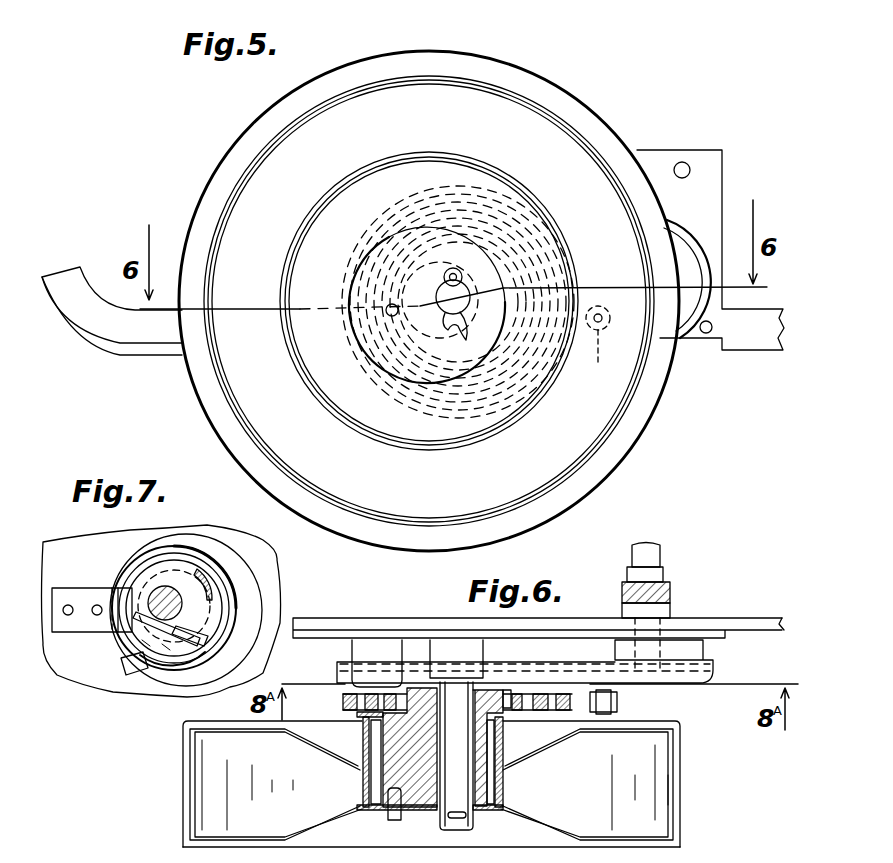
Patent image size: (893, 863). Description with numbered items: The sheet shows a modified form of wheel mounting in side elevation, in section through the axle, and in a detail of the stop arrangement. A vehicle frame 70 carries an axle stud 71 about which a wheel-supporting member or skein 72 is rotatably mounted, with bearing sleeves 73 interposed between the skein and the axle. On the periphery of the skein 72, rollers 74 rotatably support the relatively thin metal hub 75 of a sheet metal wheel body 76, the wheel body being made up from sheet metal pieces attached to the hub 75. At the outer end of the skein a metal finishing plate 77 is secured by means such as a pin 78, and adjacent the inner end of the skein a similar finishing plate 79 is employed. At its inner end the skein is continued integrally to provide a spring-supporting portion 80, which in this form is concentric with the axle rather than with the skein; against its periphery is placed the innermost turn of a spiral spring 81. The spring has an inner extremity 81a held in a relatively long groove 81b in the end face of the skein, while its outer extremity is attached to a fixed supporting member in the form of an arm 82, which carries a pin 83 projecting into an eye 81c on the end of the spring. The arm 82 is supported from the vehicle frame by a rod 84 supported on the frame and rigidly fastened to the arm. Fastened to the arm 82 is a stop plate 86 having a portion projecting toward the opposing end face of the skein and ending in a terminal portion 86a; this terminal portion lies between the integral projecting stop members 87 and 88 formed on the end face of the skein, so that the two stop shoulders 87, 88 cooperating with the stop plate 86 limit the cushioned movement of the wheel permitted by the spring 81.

In FIG. 5, the vehicle frame 70 is at (58, 277).
In FIG. 5, the axle stud 71 is at (458, 292).
In FIG. 7, the axle stud 71 is at (170, 590).
In FIG. 7, the wheel-supporting member or skein 72 is at (232, 606).
In FIG. 6, the wheel-supporting member or skein 72 is at (405, 771).
In FIG. 6, the bearing sleeves 73 is at (506, 690).
In FIG. 6, the rollers 74 is at (376, 752).
In FIG. 6, the metal hub 75 is at (363, 742).
In FIG. 5, the sheet metal wheel body 76 is at (583, 118).
In FIG. 7, the sheet metal wheel body 76 is at (231, 540).
In FIG. 6, the sheet metal wheel body 76 is at (183, 785).
In FIG. 5, the finishing plate 77 is at (392, 252).
In FIG. 6, the finishing plate 77 is at (420, 811).
In FIG. 5, the pin 78 is at (386, 306).
In FIG. 6, the pin 78 is at (390, 819).
In FIG. 7, the finishing plate 79 is at (237, 556).
In FIG. 6, the finishing plate 79 is at (358, 715).
In FIG. 7, the spring-supporting portion 80 is at (148, 562).
In FIG. 6, the spring-supporting portion 80 is at (417, 695).
In FIG. 5, the spiral spring 81 is at (527, 216).
In FIG. 7, the spiral spring 81 is at (150, 672).
In FIG. 6, the spiral spring 81 is at (368, 700).
In FIG. 7, the inner extremity 81a is at (150, 630).
In FIG. 7, the groove 81b is at (175, 606).
In FIG. 5, the eye 81c is at (595, 359).
In FIG. 6, the eye 81c is at (617, 703).
In FIG. 5, the arm 82 is at (683, 246).
In FIG. 6, the arm 82 is at (700, 671).
In FIG. 5, the pin 83 is at (603, 326).
In FIG. 6, the pin 83 is at (600, 688).
In FIG. 6, the rod 84 is at (660, 597).
In FIG. 6, the stop plate 86 is at (508, 706).
In FIG. 7, the terminal portion 86a is at (122, 600).
In FIG. 7, the stop member 87 is at (210, 582).
In FIG. 7, the stop member 88 is at (136, 670).